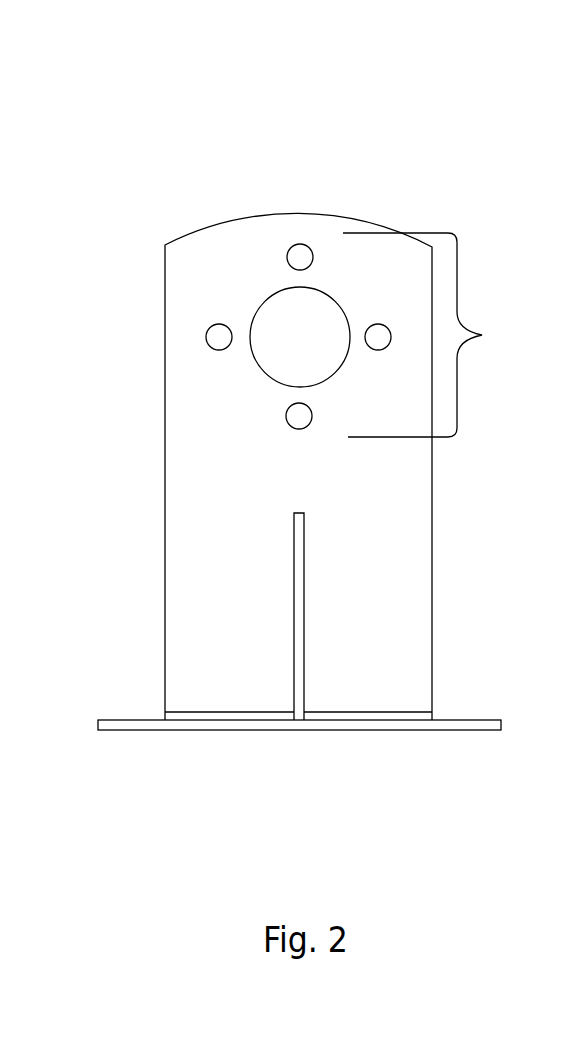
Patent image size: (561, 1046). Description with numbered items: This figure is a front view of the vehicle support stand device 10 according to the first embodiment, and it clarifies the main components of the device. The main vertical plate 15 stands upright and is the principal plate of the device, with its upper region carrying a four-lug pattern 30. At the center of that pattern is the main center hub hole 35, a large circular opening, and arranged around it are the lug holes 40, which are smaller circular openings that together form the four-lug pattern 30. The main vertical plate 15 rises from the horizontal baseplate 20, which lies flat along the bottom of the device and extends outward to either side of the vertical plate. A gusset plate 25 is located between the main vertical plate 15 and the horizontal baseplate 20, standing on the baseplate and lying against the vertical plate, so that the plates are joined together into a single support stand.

The vehicle support stand device 10 is at (87, 152).
The main vertical plate 15 is at (390, 550).
The horizontal baseplate 20 is at (200, 731).
The gusset plate 25 is at (304, 670).
The four-lug pattern 30 is at (429, 335).
The main center hub hole 35 is at (278, 324).
The lug holes 40 is at (300, 244).